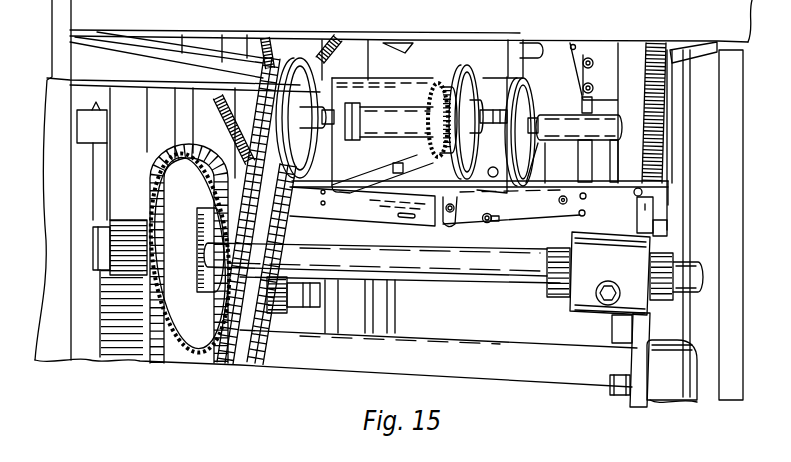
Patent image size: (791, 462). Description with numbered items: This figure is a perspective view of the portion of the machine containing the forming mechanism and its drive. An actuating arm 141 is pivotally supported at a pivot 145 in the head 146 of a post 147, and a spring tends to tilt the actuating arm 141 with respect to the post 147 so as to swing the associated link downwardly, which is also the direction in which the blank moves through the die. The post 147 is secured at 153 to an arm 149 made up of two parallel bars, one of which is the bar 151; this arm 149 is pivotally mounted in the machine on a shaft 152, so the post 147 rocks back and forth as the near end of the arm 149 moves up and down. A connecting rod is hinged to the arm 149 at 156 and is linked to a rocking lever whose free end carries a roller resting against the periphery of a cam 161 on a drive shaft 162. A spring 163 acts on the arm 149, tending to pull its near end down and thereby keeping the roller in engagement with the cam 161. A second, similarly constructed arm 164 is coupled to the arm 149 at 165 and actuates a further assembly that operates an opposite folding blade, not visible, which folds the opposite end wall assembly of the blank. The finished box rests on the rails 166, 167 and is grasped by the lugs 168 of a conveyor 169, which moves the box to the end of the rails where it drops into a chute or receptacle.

The actuating arm 141 is at (543, 43).
The pivot 145 is at (579, 25).
The head 146 is at (605, 50).
The post 147 is at (583, 103).
The arm 149 is at (592, 202).
The parallel bar 151 is at (618, 205).
The shaft 152 is at (559, 203).
The securing point 153 is at (582, 216).
The hinge 156 is at (487, 222).
The cam 161 is at (467, 92).
The drive shaft 162 is at (600, 128).
The spring 163 is at (648, 152).
The second arm 164 is at (360, 207).
The coupling 165 is at (443, 223).
The rail 166 is at (352, 58).
The rail 167 is at (493, 80).
The lug 168 is at (447, 77).
The conveyor 169 is at (427, 95).